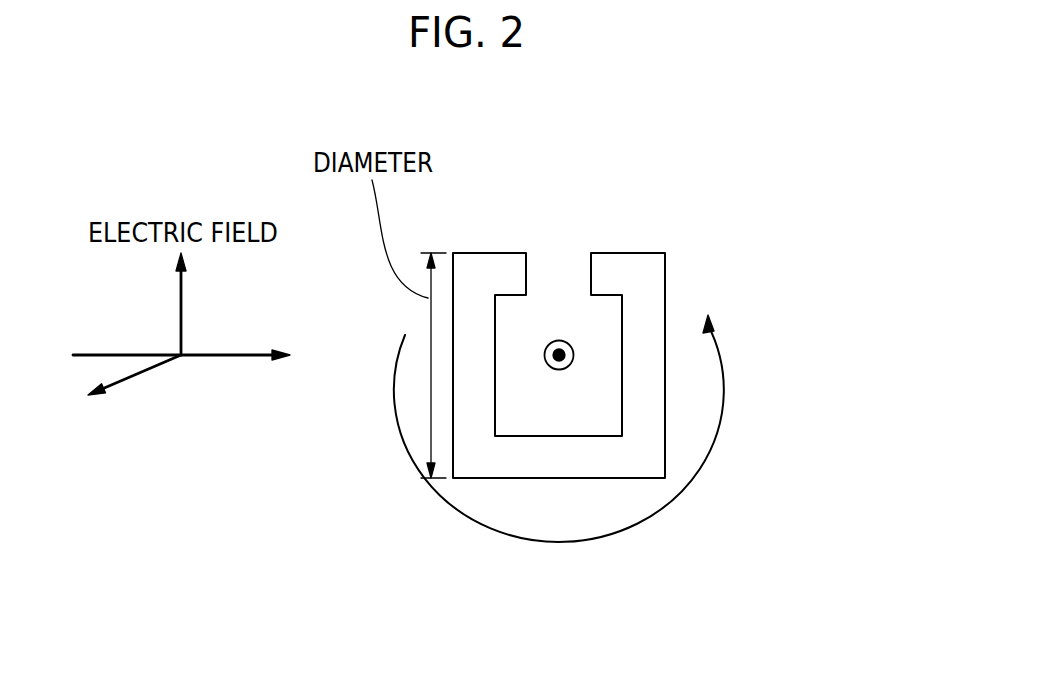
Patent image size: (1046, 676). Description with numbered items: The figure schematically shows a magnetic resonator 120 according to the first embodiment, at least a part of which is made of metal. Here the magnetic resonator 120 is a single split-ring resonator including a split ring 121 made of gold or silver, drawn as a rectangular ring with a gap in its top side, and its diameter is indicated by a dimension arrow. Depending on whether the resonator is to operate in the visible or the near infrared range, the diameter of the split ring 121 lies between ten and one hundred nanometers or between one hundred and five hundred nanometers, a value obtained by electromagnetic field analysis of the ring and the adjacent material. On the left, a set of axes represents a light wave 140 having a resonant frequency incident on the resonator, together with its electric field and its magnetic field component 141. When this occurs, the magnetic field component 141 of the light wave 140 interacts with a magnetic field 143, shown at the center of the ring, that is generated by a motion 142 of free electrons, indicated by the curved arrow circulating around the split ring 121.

The magnetic resonator 120 is at (615, 190).
The split ring 121 is at (648, 266).
The light wave 140 is at (98, 353).
The magnetic field component 141 is at (142, 372).
The motion of free electrons 142 is at (553, 545).
The magnetic field 143 is at (560, 342).